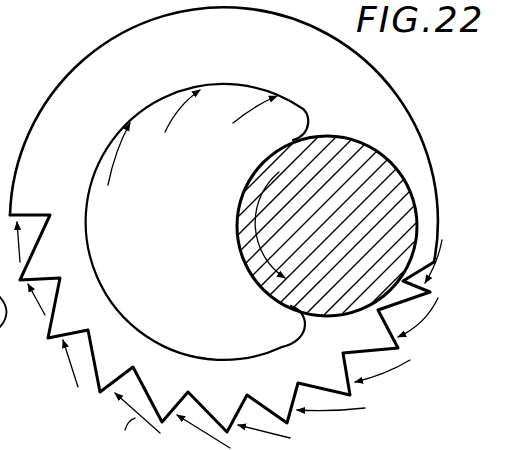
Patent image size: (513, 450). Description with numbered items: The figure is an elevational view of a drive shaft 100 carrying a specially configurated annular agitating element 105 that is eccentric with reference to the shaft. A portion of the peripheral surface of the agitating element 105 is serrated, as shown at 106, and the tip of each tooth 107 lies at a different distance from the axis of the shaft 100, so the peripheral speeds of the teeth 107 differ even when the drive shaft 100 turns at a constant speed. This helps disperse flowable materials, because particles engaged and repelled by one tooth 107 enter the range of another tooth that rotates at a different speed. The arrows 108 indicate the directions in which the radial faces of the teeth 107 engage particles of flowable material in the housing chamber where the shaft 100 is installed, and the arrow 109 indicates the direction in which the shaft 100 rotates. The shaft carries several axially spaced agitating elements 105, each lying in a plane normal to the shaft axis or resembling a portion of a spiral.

The drive shaft 100 is at (291, 298).
The annular agitating element 105 is at (72, 218).
The serrated portion of peripheral surface 106 is at (78, 388).
The tooth 107 is at (220, 412).
The arrows 108 is at (195, 432).
The arrow 109 is at (279, 168).